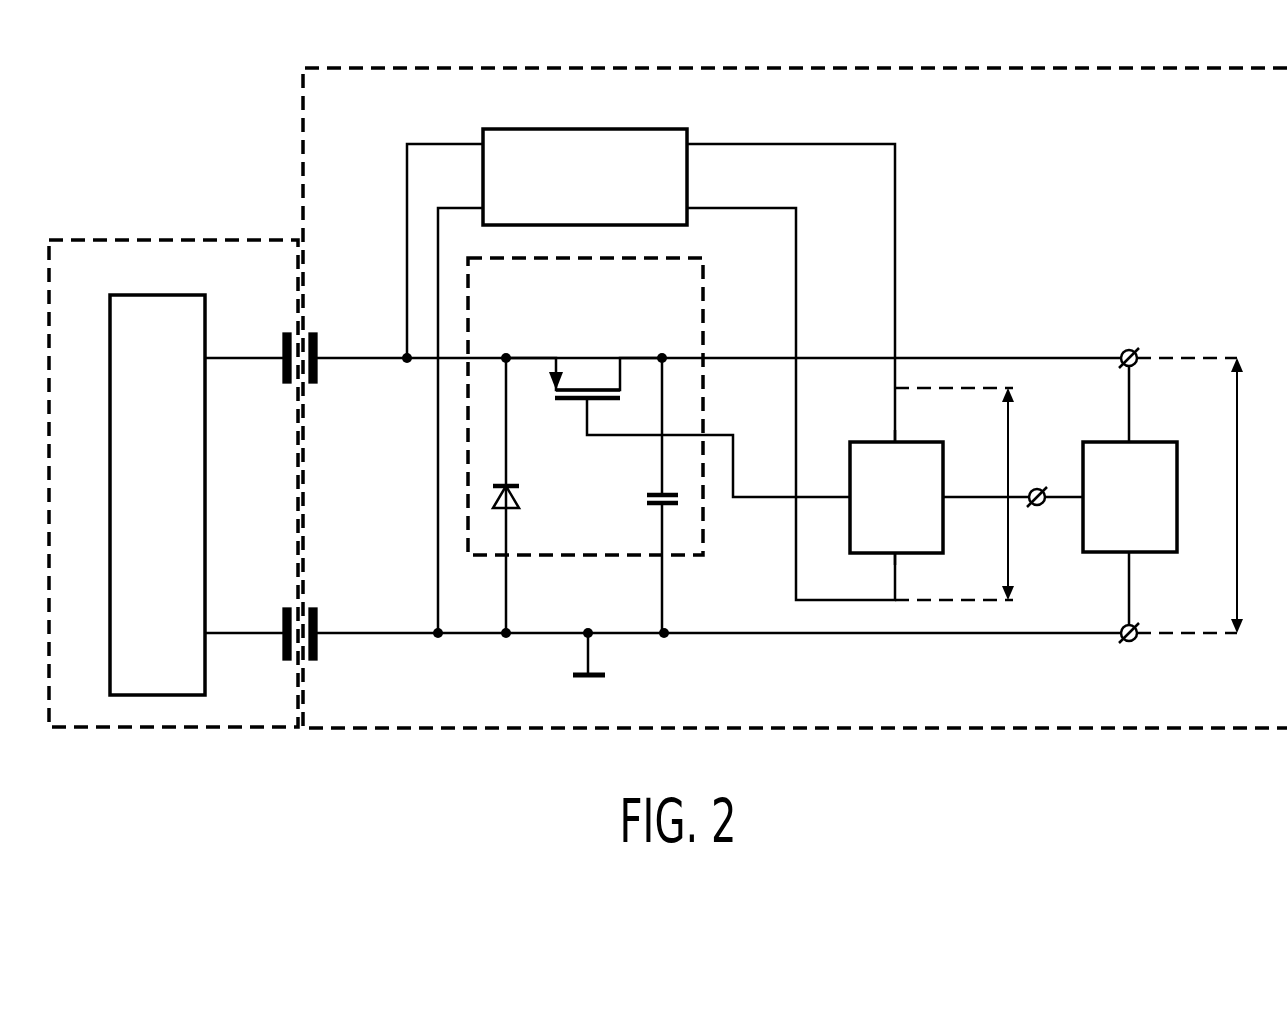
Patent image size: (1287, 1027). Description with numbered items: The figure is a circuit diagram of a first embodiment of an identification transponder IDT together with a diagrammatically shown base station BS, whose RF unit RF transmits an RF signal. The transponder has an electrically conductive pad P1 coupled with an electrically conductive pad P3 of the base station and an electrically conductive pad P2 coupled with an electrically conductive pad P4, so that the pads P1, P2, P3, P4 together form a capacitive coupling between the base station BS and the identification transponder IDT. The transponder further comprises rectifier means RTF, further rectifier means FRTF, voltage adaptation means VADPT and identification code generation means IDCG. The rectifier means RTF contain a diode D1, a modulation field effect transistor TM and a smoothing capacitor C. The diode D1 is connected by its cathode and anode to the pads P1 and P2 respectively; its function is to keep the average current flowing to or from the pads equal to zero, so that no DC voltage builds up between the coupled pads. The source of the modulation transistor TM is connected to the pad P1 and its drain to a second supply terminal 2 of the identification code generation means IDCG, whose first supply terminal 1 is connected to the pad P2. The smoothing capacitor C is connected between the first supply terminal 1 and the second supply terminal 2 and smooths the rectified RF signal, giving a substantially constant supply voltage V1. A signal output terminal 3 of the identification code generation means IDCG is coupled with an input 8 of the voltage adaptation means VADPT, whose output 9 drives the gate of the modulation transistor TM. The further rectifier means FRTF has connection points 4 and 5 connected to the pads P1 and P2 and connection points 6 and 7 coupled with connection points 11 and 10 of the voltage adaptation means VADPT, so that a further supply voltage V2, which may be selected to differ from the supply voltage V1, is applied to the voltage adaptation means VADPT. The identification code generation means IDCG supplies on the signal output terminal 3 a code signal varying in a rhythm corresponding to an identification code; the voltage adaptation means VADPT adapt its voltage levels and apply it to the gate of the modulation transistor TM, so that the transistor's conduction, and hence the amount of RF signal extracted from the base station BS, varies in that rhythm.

The first supply terminal 1 is at (1130, 645).
The second supply terminal 2 is at (1131, 349).
The signal output terminal 3 is at (1037, 488).
The connection point 4 is at (483, 143).
The connection point 5 is at (483, 208).
The connection point 6 is at (687, 143).
The connection point 7 is at (687, 208).
The input 8 is at (943, 497).
The output 9 is at (849, 497).
The connection point 10 is at (900, 553).
The connection point 11 is at (893, 441).
The identification transponder IDT is at (633, 68).
The base station BS is at (160, 240).
The RF signal source of the base station RF is at (157, 495).
The electrically conductive pad P1 is at (317, 349).
The electrically conductive pad P2 is at (317, 624).
The electrically conductive pad P3 is at (283, 349).
The electrically conductive pad P4 is at (283, 624).
The further rectifier means FRTF is at (577, 128).
The rectifier means RTF is at (703, 282).
The modulation field effect transistor TM is at (593, 348).
The diode D1 is at (519, 500).
The smoothing capacitor C is at (648, 503).
The voltage adaptation means VADPT is at (922, 441).
The identification code generation means IDCG is at (1165, 556).
The supply voltage V1 is at (1252, 495).
The further supply voltage V2 is at (1023, 494).